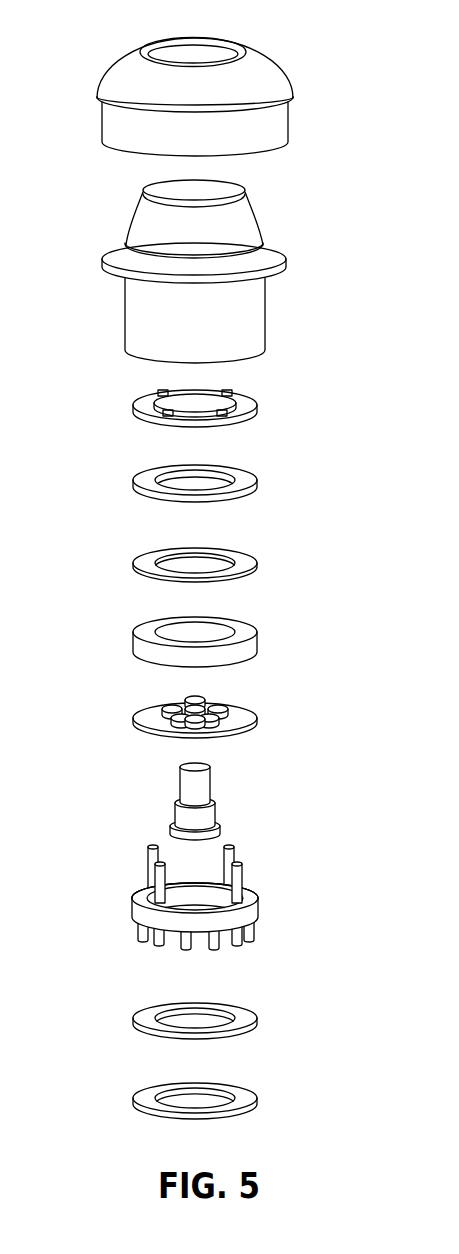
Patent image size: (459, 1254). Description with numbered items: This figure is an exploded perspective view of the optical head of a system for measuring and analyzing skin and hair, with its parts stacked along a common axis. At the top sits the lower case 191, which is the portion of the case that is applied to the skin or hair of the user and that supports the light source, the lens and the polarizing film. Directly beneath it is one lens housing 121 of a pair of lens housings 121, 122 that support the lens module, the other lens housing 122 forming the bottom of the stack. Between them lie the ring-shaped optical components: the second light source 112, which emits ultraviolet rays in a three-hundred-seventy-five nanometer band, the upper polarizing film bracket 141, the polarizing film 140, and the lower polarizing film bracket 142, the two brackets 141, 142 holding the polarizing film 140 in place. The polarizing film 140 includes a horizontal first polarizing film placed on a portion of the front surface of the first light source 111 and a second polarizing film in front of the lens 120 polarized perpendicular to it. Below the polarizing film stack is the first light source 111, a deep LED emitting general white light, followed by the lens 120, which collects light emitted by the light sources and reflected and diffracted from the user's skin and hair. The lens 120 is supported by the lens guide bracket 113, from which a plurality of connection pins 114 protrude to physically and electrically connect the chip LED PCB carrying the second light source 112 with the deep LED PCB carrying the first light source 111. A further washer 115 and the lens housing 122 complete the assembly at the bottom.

The lower case 191 is at (268, 77).
The lens housing 121 is at (252, 227).
The second light source 112 is at (257, 405).
The upper polarizing film bracket 141 is at (257, 480).
The polarizing film 140 is at (257, 563).
The lower polarizing film bracket 142 is at (257, 640).
The first light source 111 is at (257, 720).
The lens 120 is at (210, 786).
The connection pins 114 is at (150, 853).
The lens guide bracket 113 is at (258, 908).
The second washer 115 is at (257, 1020).
The lens housing 122 is at (257, 1100).